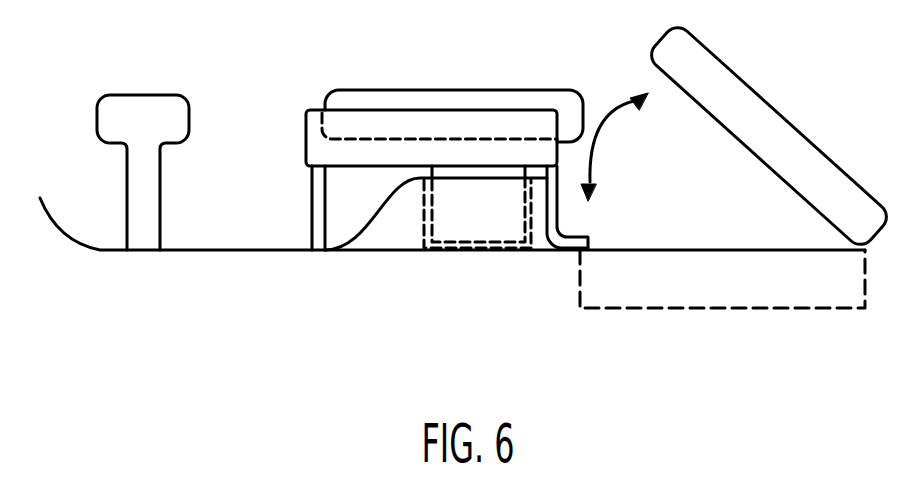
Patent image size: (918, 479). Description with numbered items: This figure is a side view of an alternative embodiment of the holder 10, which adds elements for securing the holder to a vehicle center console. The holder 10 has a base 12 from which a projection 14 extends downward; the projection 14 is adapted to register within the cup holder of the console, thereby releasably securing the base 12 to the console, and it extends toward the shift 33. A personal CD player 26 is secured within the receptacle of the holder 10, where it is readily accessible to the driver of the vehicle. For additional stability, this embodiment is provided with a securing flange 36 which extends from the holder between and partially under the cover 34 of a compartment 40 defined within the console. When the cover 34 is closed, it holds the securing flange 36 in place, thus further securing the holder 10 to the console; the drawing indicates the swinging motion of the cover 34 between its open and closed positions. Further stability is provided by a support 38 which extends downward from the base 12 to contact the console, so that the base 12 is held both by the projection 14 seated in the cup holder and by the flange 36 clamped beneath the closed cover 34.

The holder 10 is at (297, 117).
The base 12 is at (308, 150).
The projection 14 is at (482, 222).
The personal CD player 26 is at (517, 103).
The shift 33 is at (145, 112).
The cover 34 is at (768, 123).
The securing flange 36 is at (568, 238).
The support 38 is at (315, 207).
The compartment 40 is at (688, 292).